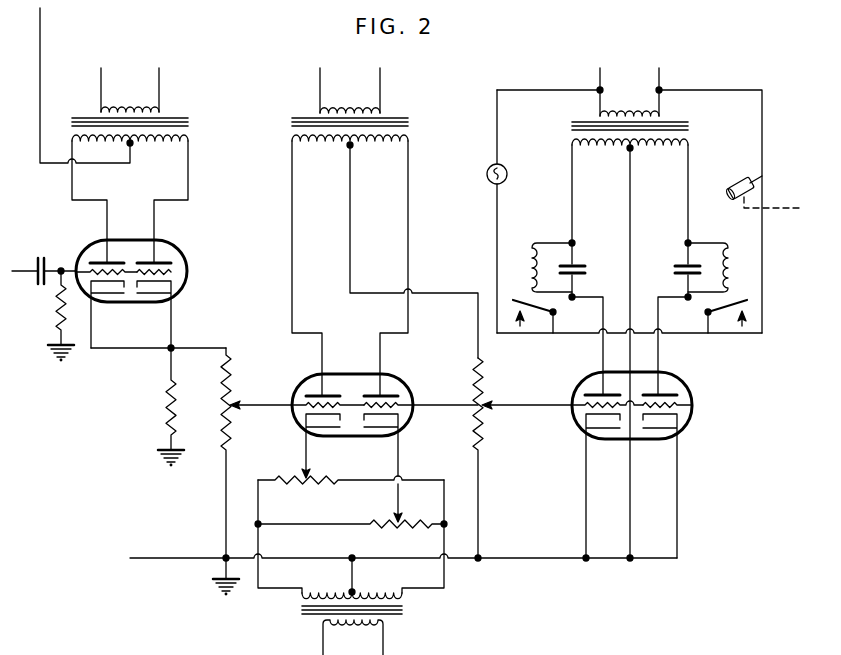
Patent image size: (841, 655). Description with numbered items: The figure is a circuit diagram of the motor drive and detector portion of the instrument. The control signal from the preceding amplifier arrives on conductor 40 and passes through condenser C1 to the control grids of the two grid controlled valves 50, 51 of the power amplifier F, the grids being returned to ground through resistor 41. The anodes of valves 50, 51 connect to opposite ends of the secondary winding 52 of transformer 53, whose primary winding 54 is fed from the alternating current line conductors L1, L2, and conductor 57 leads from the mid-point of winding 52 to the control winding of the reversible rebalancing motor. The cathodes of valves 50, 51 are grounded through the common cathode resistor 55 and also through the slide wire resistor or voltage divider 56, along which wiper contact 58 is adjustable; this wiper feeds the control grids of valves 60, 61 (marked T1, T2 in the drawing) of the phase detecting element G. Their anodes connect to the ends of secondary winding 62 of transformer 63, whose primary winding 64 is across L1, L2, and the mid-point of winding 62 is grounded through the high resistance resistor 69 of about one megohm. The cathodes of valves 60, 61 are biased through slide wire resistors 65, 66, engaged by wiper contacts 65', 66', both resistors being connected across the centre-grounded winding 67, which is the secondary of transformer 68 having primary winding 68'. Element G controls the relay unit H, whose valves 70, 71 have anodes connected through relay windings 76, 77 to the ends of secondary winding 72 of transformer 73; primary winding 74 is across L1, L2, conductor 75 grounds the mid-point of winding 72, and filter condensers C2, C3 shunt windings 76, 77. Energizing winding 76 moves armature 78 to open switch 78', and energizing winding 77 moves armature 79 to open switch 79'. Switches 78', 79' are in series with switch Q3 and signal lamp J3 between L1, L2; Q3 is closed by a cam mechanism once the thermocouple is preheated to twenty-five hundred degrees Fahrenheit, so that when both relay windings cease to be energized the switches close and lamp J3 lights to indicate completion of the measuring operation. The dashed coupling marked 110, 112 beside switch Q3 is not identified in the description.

The conductor 40 is at (26, 270).
The resistor 41 is at (58, 304).
The grid controlled valve 50 is at (97, 252).
The grid controlled valve 51 is at (190, 254).
The secondary winding 52 is at (151, 144).
The transformer 53 is at (185, 116).
The primary winding 54 is at (138, 104).
The common cathode resistor 55 is at (168, 400).
The slide wire resistor 56 is at (220, 390).
The conductor 57 is at (41, 30).
The wiper contact 58 is at (237, 400).
The grid control valve 60 is at (313, 411).
The grid control valve 61 is at (402, 432).
The secondary winding 62 is at (366, 146).
The transformer 63 is at (412, 121).
The primary winding 64 is at (364, 106).
The slide wire resistor 65 is at (351, 495).
The wiper contact 65' is at (288, 461).
The slide wire resistor 66 is at (351, 537).
The wiper contact 66' is at (382, 505).
The winding 67 is at (358, 592).
The transformer 68 is at (386, 611).
The primary winding 68' is at (353, 637).
The resistor 69 is at (475, 406).
The grid controlled valve 70 is at (590, 387).
The grid controlled valve 71 is at (682, 389).
The secondary winding 72 is at (646, 150).
The transformer 73 is at (695, 130).
The primary winding 74 is at (636, 108).
The conductor 75 is at (630, 182).
The relay winding 76 is at (558, 270).
The relay winding 77 is at (703, 270).
The armature 78 is at (534, 267).
The switch 78' is at (534, 329).
The armature 79 is at (727, 267).
The switch 79' is at (726, 329).
The mechanical coupling 110 is at (780, 230).
The mechanical coupling 112 is at (786, 214).
The condenser C1 is at (41, 257).
The filter condenser C2 is at (586, 272).
The filter condenser C3 is at (714, 258).
The power amplifier F is at (156, 272).
The phase detecting element G is at (338, 403).
The relay unit H is at (565, 222).
The signal lamp J3 is at (488, 164).
The switch Q3 is at (740, 176).
The alternating current line conductor L1 is at (101, 72).
The alternating current line conductor L2 is at (159, 74).
The first triode T1 is at (301, 442).
The second triode T2 is at (408, 426).